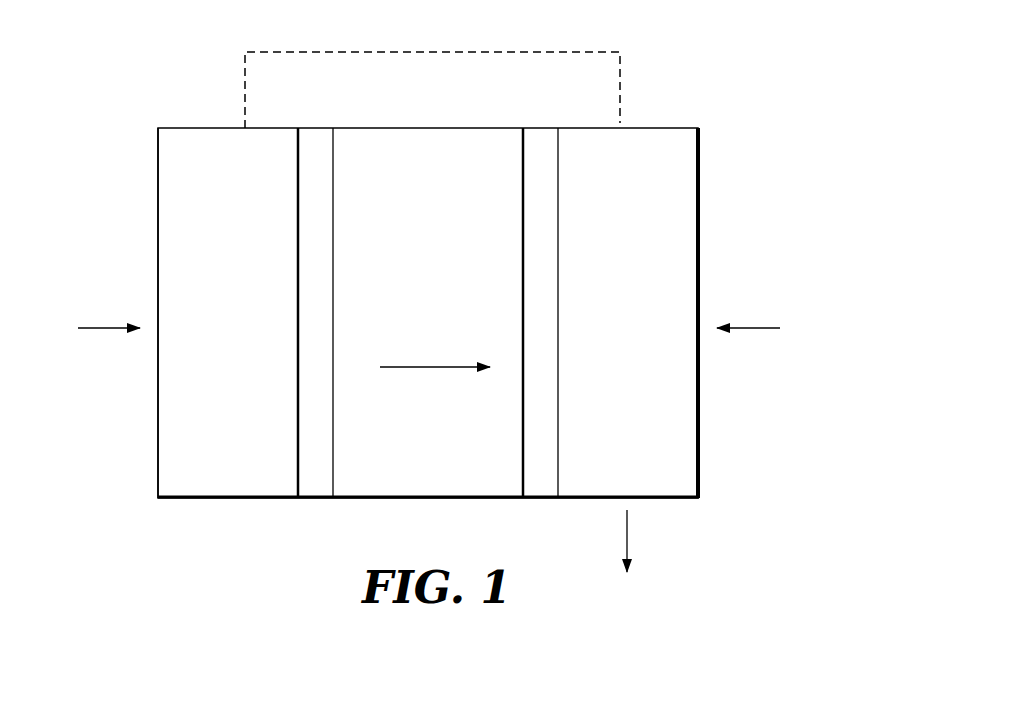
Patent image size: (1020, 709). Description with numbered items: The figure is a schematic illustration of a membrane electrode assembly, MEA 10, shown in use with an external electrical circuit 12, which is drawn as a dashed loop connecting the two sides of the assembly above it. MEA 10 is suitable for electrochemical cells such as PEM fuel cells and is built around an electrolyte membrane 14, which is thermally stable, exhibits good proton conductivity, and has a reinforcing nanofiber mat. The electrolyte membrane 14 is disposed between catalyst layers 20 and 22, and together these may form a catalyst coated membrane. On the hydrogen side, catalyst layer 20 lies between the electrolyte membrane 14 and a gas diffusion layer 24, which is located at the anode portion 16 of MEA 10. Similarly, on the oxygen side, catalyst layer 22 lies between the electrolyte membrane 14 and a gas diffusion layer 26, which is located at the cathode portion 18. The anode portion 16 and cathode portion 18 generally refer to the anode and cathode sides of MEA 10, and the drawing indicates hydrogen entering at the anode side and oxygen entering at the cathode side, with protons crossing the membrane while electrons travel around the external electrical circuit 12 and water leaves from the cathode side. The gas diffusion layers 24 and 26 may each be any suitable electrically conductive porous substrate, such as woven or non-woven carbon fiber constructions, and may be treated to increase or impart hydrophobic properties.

The MEA 10 is at (148, 120).
The external electrical circuit 12 is at (607, 38).
The electrolyte membrane 14 is at (442, 481).
The anode portion 16 is at (134, 430).
The cathode portion 18 is at (726, 430).
The catalyst layer 20 is at (323, 213).
The catalyst layer 22 is at (537, 215).
The gas diffusion layer 24 is at (228, 481).
The gas diffusion layer 26 is at (642, 481).